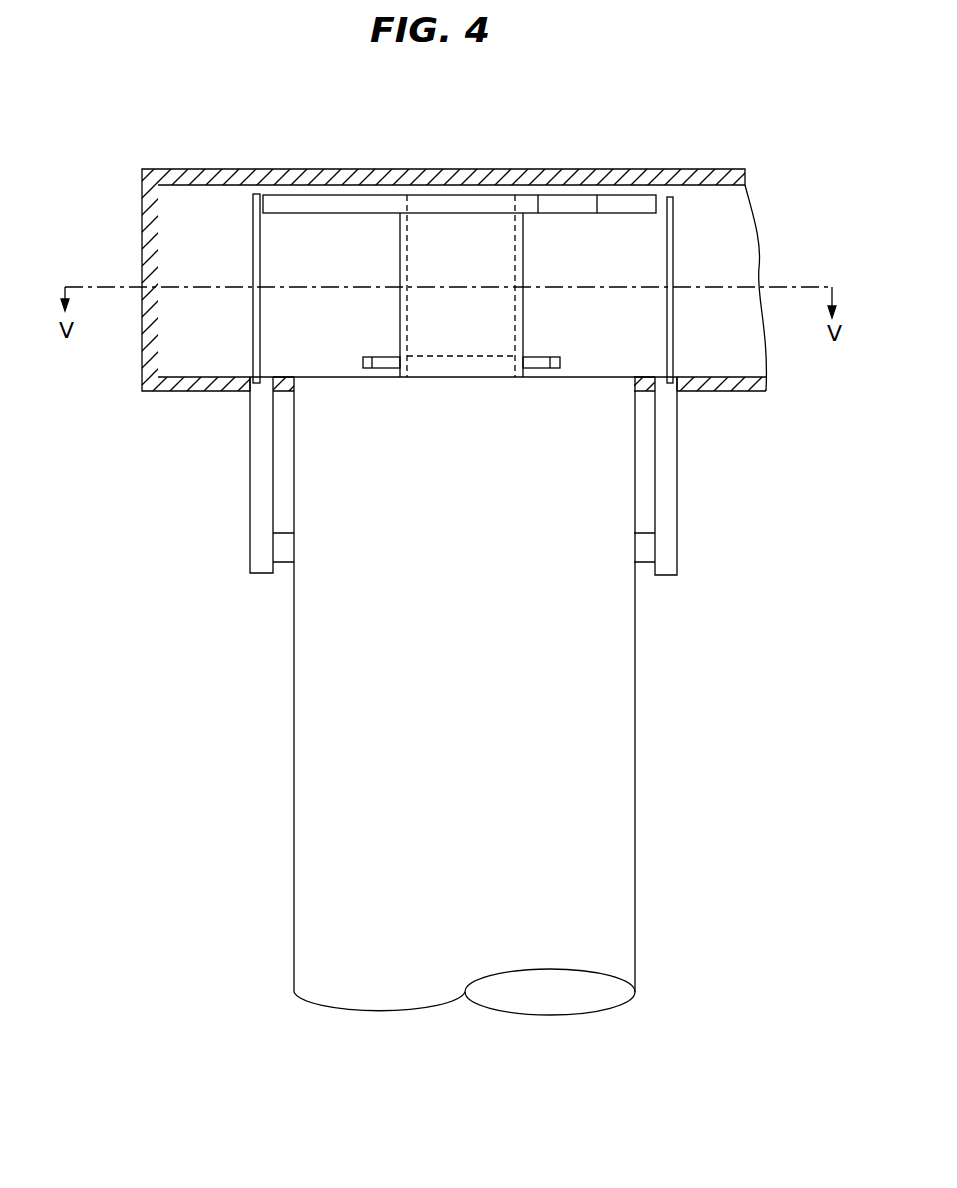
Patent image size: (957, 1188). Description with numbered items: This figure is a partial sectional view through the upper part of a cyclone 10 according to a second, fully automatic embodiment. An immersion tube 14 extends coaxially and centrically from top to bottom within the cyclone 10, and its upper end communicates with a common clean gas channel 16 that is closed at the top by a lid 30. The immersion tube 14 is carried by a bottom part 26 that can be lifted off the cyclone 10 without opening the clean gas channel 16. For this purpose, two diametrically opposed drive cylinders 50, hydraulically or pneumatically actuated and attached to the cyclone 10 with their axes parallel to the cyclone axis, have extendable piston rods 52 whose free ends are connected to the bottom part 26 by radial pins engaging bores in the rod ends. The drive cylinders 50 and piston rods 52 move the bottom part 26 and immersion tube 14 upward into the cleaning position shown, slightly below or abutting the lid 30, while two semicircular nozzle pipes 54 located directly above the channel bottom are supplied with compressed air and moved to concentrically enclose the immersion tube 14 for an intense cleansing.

The cyclone 10 is at (477, 788).
The immersion tube 14 is at (465, 230).
The clean gas channel 16 is at (163, 227).
The bottom part 26 is at (563, 207).
The lid 30 is at (310, 169).
The drive cylinder 50 is at (667, 478).
The piston rod 52 is at (673, 247).
The nozzle pipe 54 is at (363, 362).